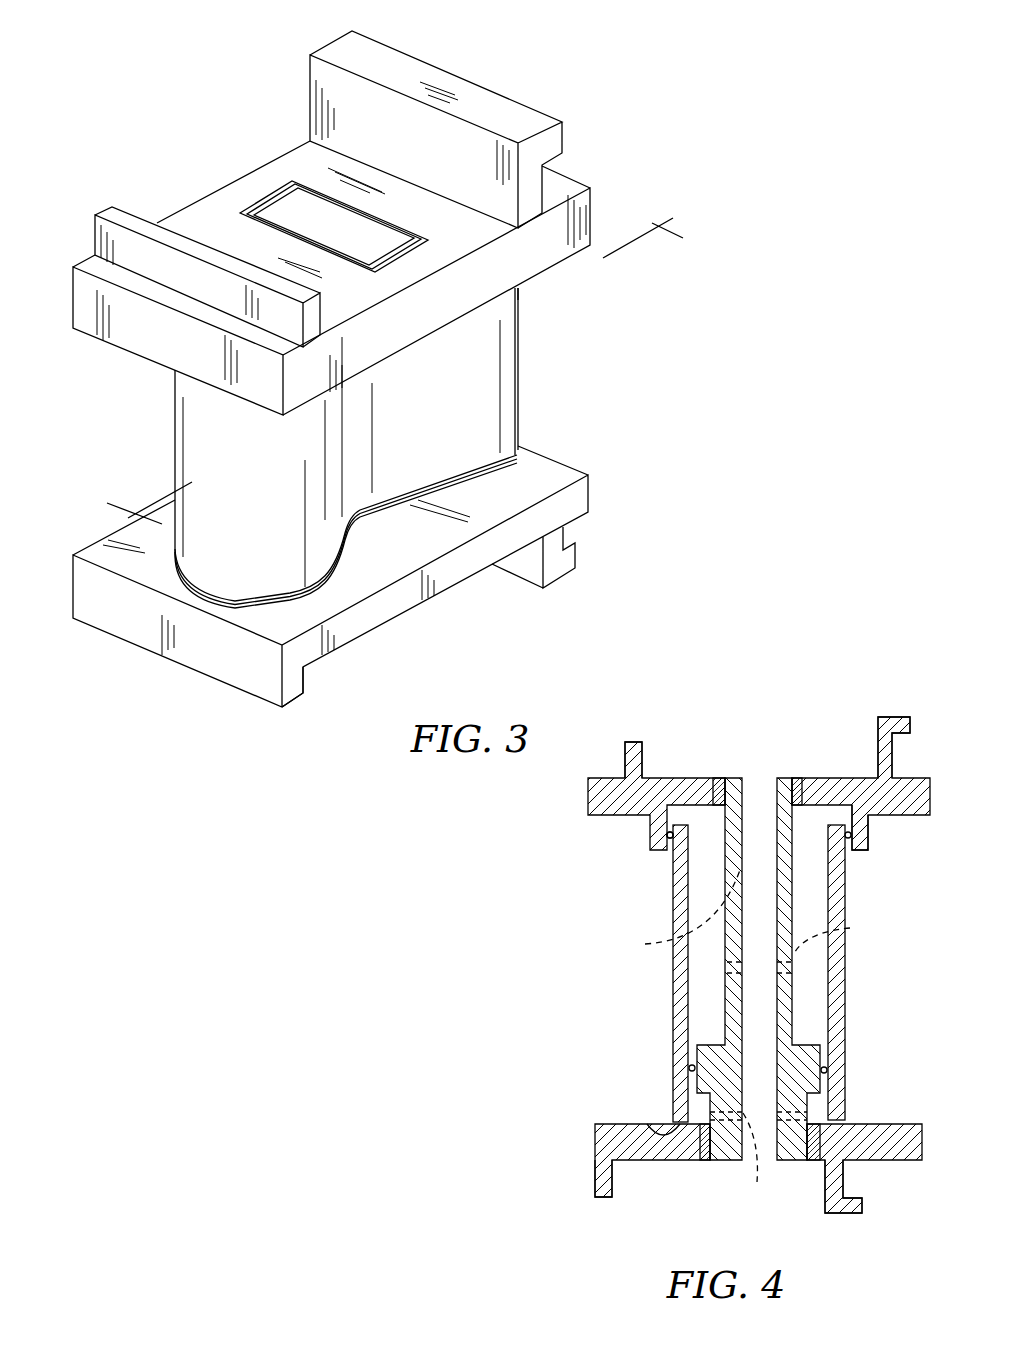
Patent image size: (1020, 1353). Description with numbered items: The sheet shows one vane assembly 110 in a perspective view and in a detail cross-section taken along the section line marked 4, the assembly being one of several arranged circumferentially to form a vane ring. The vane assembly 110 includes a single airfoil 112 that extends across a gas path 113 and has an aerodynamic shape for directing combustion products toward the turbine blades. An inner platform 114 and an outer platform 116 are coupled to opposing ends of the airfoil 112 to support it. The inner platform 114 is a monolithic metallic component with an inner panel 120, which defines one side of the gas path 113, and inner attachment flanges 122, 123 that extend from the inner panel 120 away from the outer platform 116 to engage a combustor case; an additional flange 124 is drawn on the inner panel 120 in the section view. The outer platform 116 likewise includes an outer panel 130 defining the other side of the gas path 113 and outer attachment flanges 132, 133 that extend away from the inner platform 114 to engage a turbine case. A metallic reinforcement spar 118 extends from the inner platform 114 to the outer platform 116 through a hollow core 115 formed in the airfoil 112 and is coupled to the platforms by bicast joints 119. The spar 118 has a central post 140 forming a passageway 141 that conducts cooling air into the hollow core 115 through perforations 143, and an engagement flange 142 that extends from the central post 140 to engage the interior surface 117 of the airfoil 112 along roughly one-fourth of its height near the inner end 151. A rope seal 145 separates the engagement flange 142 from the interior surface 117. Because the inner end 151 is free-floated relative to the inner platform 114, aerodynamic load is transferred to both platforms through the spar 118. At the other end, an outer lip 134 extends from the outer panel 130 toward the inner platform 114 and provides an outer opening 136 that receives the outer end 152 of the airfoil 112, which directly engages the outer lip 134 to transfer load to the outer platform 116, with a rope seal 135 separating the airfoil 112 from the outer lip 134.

In FIG. 3, the section line 4- 4 is at (648, 222).
In FIG. 3, the vane assembly 110 is at (150, 130).
In FIG. 4, the vane assembly 110 is at (848, 633).
In FIG. 3, the airfoil 112 is at (178, 425).
In FIG. 4, the airfoil 112 is at (665, 982).
In FIG. 3, the gas path 113 is at (143, 447).
In FIG. 4, the gas path 113 is at (665, 1042).
In FIG. 4, the inner platform 114 is at (590, 1153).
In FIG. 4, the hollow core 115 is at (715, 870).
In FIG. 4, the outer platform 116 is at (586, 795).
In FIG. 4, the interior surface 117 is at (693, 1028).
In FIG. 3, the reinforcement spar 118 is at (278, 195).
In FIG. 4, the reinforcement spar 118 is at (786, 772).
In FIG. 4, the bicast joints 119 is at (720, 776).
In FIG. 3, the inner panel 120 is at (552, 478).
In FIG. 4, the inner panel 120 is at (907, 1120).
In FIG. 3, the inner attachment flange 122 is at (290, 690).
In FIG. 4, the inner attachment flange 122 is at (600, 1200).
In FIG. 3, the inner attachment flange 123 is at (553, 574).
In FIG. 4, the tab 124 is at (847, 1215).
In FIG. 3, the outer panel 130 is at (556, 270).
In FIG. 4, the outer panel 130 is at (910, 772).
In FIG. 3, the outer attachment flange 132 is at (118, 210).
In FIG. 4, the outer attachment flange 132 is at (633, 740).
In FIG. 3, the outer attachment flange 133 is at (348, 62).
In FIG. 4, the outer attachment flange 133 is at (893, 712).
In FIG. 3, the outer lip 134 is at (525, 293).
In FIG. 4, the outer lip 134 is at (870, 832).
In FIG. 4, the rope seal 135 is at (850, 845).
In FIG. 4, the outer opening 136 is at (668, 850).
In FIG. 4, the central post 140 is at (797, 830).
In FIG. 4, the passageway 141 is at (745, 792).
In FIG. 4, the engagement flange 142 is at (803, 1040).
In FIG. 4, the perforations 143 is at (757, 1038).
In FIG. 4, the rope seal 145 is at (825, 1048).
In FIG. 4, the inner end 151 is at (652, 1130).
In FIG. 4, the outer end 152 is at (680, 823).